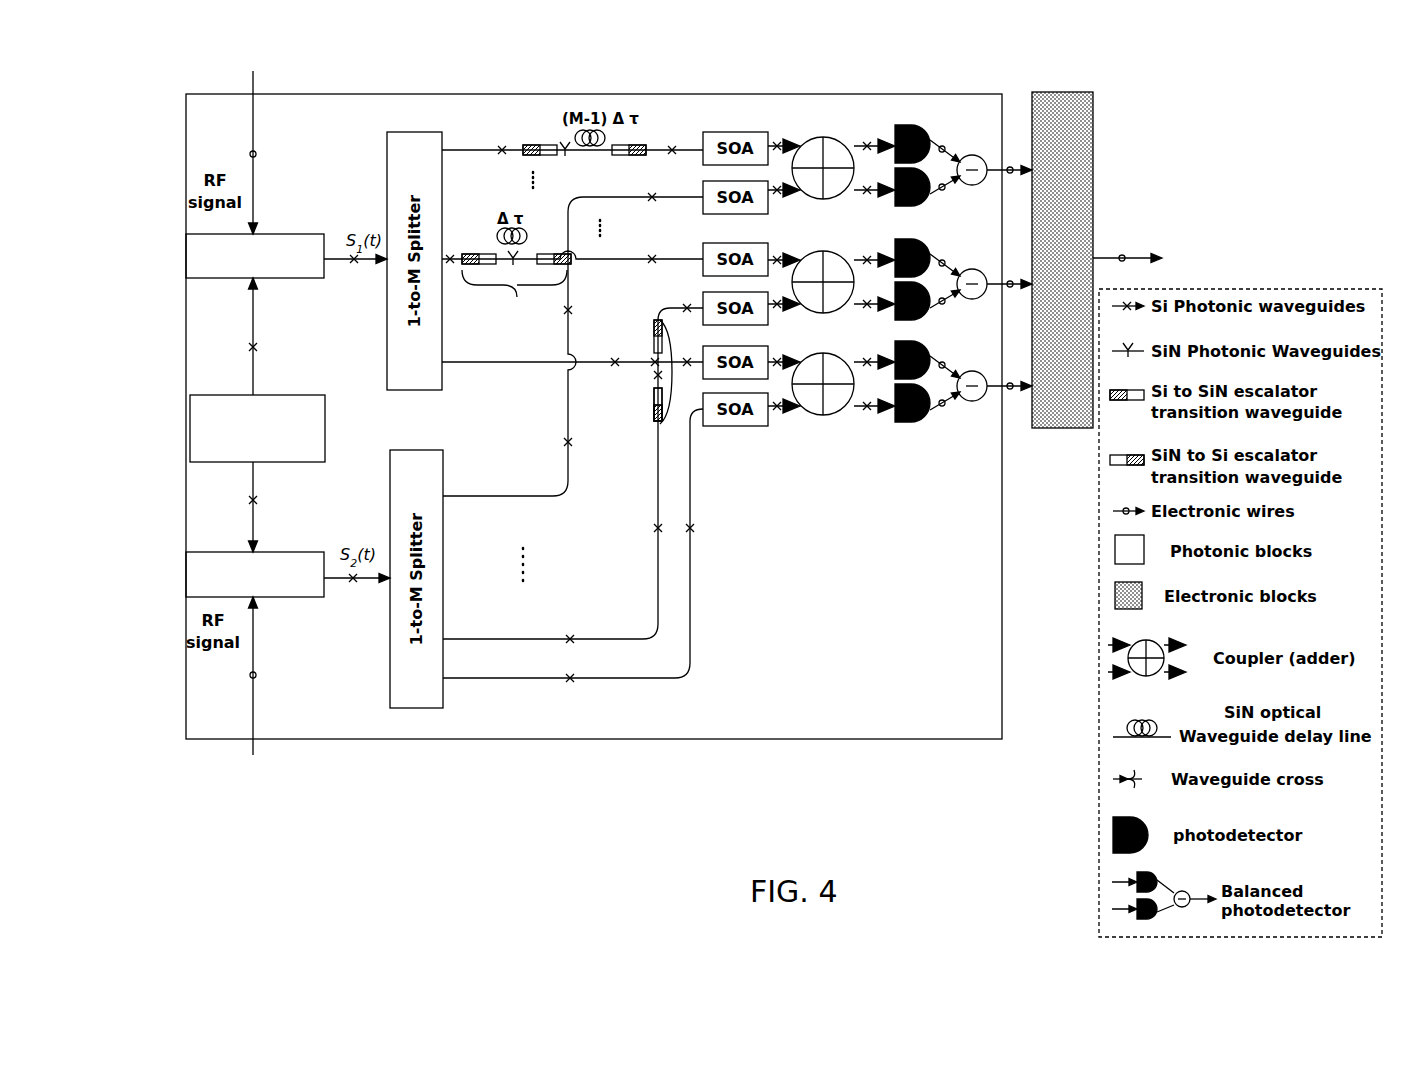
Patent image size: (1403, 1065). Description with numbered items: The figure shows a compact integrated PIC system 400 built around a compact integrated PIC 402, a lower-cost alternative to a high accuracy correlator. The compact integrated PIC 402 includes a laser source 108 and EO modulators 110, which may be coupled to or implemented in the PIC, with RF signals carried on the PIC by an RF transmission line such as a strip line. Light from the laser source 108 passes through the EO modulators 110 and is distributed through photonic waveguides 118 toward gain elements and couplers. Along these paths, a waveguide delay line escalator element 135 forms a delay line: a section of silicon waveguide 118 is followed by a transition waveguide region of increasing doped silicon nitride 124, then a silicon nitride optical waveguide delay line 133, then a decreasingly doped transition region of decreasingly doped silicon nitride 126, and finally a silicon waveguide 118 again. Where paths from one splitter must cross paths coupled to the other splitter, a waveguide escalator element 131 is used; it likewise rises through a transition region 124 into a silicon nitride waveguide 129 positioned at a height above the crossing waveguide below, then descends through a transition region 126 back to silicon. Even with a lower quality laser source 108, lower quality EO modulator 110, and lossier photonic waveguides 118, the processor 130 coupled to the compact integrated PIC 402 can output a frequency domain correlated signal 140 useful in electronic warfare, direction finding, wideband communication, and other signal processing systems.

The compact integrated PIC system 400 is at (338, 62).
The compact integrated PIC 402 is at (426, 94).
The laser source 108 is at (294, 464).
The EO modulator 110 is at (222, 280).
The photonic waveguide 118 is at (460, 262).
The transition waveguide region of increasing doped silicon nitride 124 is at (478, 259).
The transition waveguide region of decreasingly doped silicon nitride 126 is at (560, 259).
The silicon nitride waveguide 129 is at (652, 392).
The waveguide escalator element 131 is at (675, 376).
The silicon nitride optical waveguide delay line 133 is at (504, 226).
The waveguide delay line escalator element 135 is at (514, 297).
The processor 130 is at (1044, 430).
The frequency domain correlated signal 140 is at (1144, 256).